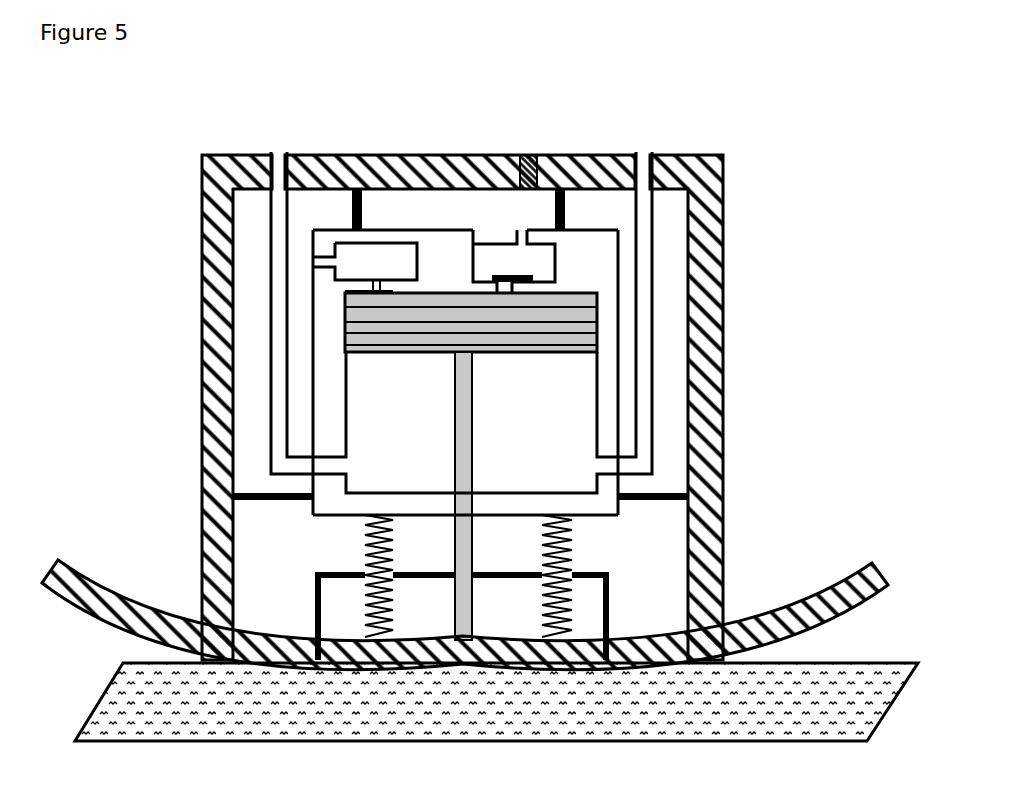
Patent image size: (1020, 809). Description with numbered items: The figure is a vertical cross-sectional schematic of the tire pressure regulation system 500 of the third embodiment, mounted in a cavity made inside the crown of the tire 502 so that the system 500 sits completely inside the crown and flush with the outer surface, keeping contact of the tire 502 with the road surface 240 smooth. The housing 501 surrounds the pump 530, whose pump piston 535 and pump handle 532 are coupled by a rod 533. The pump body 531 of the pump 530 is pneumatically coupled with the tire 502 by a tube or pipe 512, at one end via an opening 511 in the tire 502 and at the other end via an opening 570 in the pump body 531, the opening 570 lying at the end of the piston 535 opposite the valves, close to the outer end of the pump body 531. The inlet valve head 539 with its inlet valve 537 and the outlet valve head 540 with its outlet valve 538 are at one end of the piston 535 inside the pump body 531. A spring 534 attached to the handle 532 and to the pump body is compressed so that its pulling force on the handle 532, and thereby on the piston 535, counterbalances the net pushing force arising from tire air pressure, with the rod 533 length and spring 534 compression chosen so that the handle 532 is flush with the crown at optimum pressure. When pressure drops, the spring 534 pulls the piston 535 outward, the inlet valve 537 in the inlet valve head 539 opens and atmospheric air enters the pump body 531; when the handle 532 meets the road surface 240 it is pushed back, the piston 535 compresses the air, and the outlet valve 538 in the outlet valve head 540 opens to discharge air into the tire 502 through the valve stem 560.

The tire pressure regulation system 500 is at (182, 144).
The housing 501 is at (203, 212).
The opening 511 is at (282, 150).
The pipe 512 is at (657, 267).
The inlet valve 537 is at (356, 290).
The inlet valve head 539 is at (411, 242).
The outlet valve 538 is at (492, 269).
The outlet valve head 540 is at (514, 240).
The valve stem 560 is at (528, 148).
The pump piston 535 is at (505, 343).
The pump body 531 is at (623, 393).
The rod 533 is at (475, 418).
The opening 570 is at (625, 468).
The spring 534 is at (585, 538).
The pump handle 532 is at (302, 638).
The pump 530 is at (512, 552).
The tire 502 is at (64, 603).
The road surface 240 is at (80, 733).